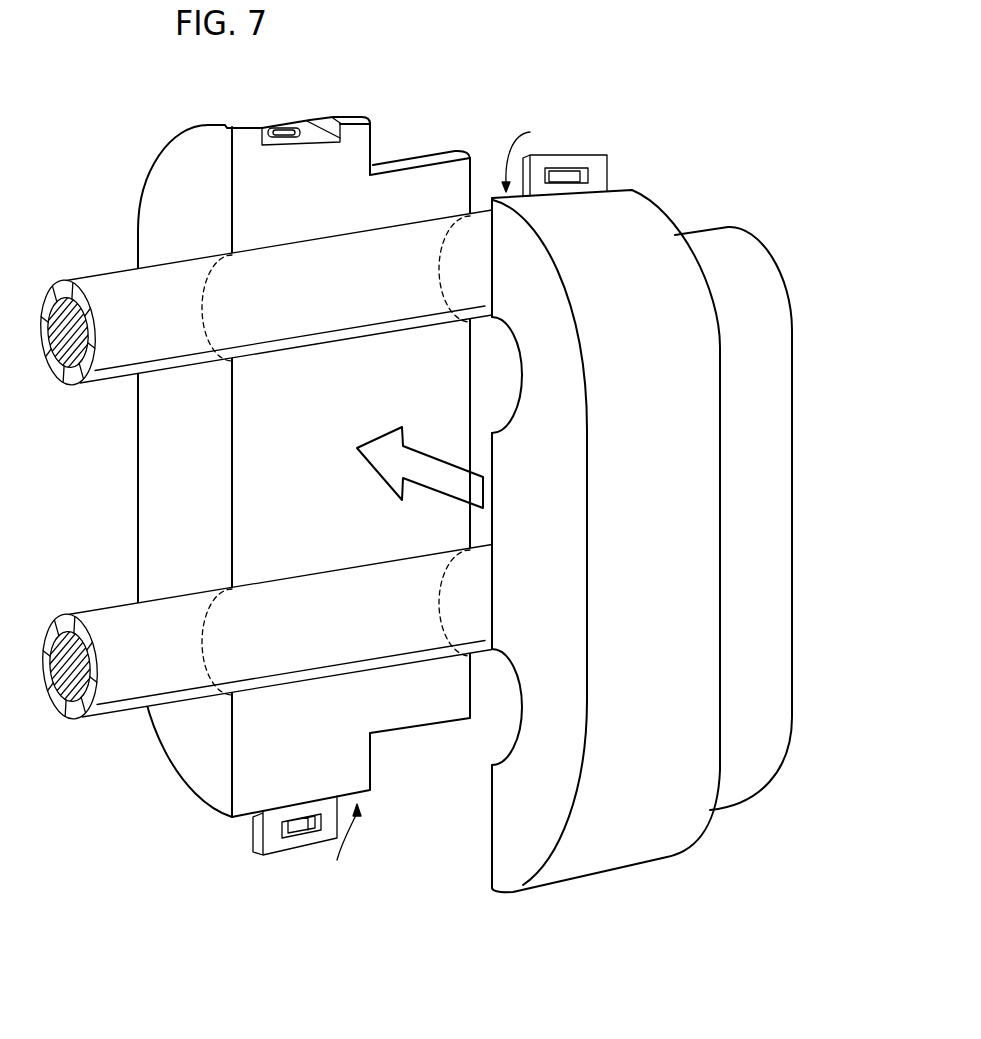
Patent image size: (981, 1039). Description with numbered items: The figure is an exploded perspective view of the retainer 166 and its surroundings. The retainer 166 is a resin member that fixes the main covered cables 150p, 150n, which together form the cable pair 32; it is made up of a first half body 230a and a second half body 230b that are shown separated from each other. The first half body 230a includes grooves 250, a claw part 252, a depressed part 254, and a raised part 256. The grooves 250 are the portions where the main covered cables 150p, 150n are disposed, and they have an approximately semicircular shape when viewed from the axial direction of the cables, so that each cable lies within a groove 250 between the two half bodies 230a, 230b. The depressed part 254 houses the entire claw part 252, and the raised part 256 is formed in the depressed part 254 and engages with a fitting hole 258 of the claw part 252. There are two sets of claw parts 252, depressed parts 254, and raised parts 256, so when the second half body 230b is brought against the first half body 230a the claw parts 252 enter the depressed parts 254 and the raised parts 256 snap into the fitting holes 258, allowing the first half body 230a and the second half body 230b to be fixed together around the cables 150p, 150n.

The retainer 166 is at (150, 149).
The first half body 230a is at (203, 770).
The second half body 230b is at (594, 862).
The groove 250 is at (208, 292).
The claw part 252 is at (275, 848).
The depressed part 254 is at (313, 133).
The raised part 256 is at (281, 125).
The fitting hole 258 is at (303, 823).
The main covered cables 32 is at (254, 482).
The main covered cable 150p is at (121, 362).
The main covered cable 150n is at (113, 617).